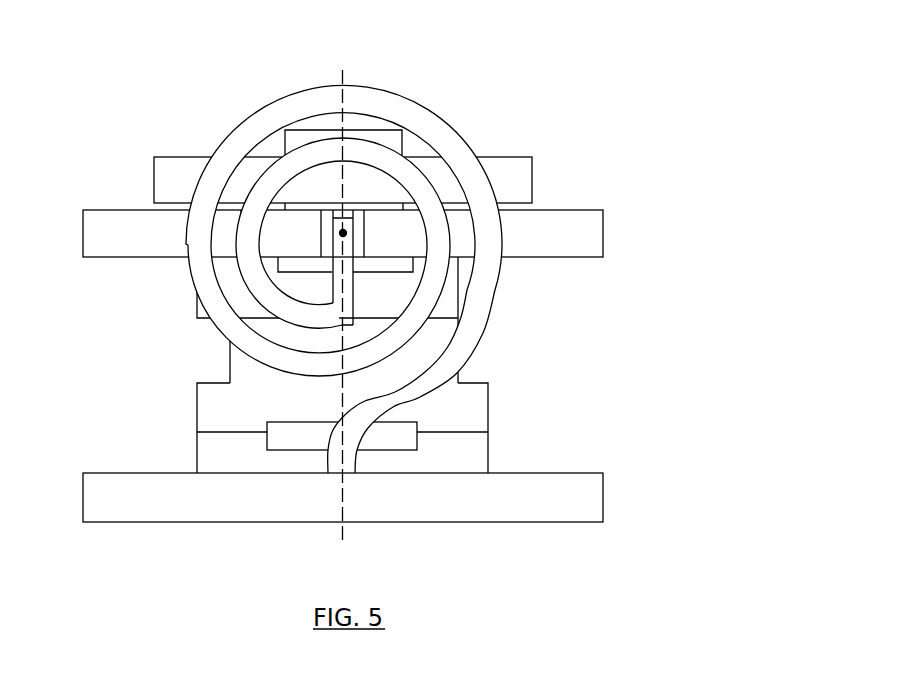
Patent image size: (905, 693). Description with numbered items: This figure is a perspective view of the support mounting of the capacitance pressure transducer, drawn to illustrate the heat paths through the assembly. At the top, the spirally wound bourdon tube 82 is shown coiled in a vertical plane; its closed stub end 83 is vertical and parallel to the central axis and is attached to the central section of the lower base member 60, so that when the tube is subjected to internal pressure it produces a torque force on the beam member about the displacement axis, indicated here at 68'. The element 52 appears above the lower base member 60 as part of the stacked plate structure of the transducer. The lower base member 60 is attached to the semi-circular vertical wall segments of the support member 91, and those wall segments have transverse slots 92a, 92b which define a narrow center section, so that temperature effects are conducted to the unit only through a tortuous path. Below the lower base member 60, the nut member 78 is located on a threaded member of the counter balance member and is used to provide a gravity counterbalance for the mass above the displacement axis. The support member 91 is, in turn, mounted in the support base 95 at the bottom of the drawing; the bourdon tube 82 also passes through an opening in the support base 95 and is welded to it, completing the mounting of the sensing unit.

The upper plate 52 is at (535, 168).
The lower base member 60 is at (602, 238).
The pivot axis 68' is at (517, 189).
The nut member 78 is at (410, 432).
The spirally wound bourdon tube 82 is at (416, 122).
The closed stub end 83 is at (343, 233).
The support member 91 is at (492, 394).
The transverse slot 92a is at (485, 360).
The transverse slot 92b is at (207, 362).
The support base 95 is at (567, 503).